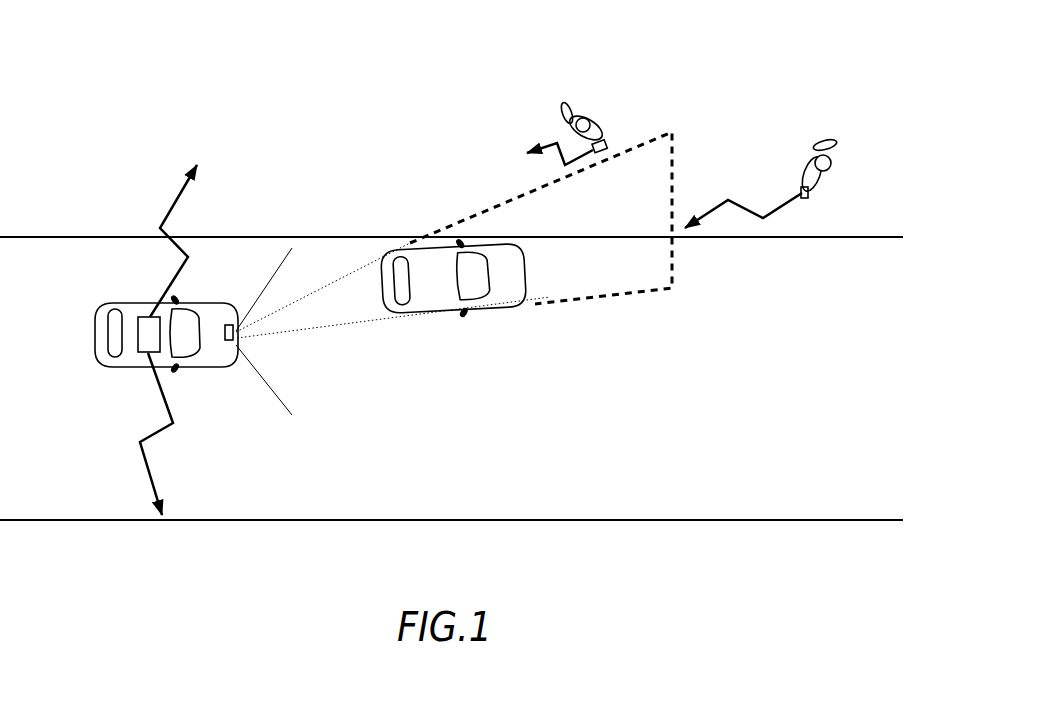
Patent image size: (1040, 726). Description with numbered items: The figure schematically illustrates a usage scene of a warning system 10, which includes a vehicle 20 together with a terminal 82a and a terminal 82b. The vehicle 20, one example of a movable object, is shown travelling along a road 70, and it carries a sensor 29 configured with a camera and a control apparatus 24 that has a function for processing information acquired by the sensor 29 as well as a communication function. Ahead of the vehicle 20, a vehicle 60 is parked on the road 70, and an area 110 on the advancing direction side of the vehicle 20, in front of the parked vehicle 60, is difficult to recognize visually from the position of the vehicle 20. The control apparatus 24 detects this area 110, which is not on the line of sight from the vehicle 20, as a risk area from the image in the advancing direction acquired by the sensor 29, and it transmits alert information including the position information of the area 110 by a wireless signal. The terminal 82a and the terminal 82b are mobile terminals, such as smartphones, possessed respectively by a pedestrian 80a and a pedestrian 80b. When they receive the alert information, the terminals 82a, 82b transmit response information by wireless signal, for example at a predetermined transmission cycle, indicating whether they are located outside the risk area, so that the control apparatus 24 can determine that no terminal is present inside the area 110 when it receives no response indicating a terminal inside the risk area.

The warning system 10 is at (850, 70).
The vehicle 20 is at (95, 337).
The control apparatus 24 is at (147, 353).
The sensor 29 is at (235, 322).
The vehicle 60 is at (383, 296).
The road 70 is at (126, 505).
The pedestrian 80a is at (593, 113).
The pedestrian 80b is at (832, 175).
The terminal 82a is at (604, 155).
The terminal 82b is at (806, 198).
The area 110 is at (672, 131).